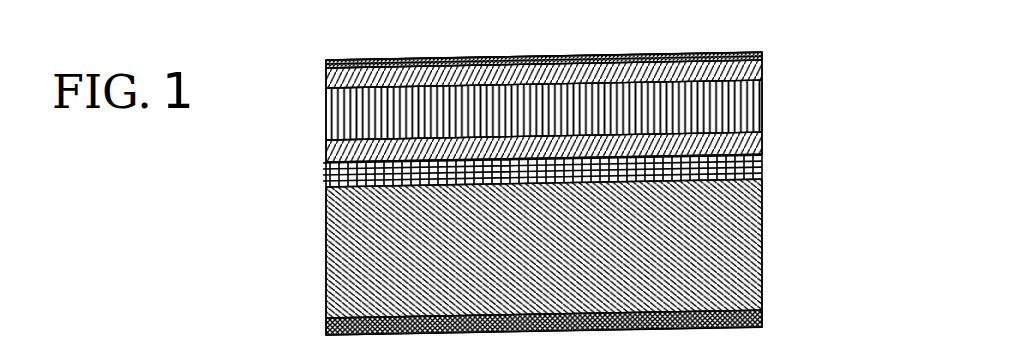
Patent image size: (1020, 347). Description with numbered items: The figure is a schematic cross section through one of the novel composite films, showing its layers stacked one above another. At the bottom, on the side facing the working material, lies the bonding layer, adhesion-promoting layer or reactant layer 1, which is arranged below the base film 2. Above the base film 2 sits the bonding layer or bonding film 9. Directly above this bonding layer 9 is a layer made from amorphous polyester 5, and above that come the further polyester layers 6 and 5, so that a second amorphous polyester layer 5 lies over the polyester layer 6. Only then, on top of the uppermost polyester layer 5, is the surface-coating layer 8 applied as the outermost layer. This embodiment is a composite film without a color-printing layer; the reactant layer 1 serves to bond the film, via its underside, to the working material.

The bonding layer, adhesion-promoting layer or reactant layer 1 is at (768, 322).
The base film 2 is at (765, 262).
The layer made from amorphous polyester 5 is at (762, 72).
The further polyester layer 6 is at (762, 112).
The surface-coating layer 8 is at (758, 56).
The bonding layer or bonding film 9 is at (766, 165).